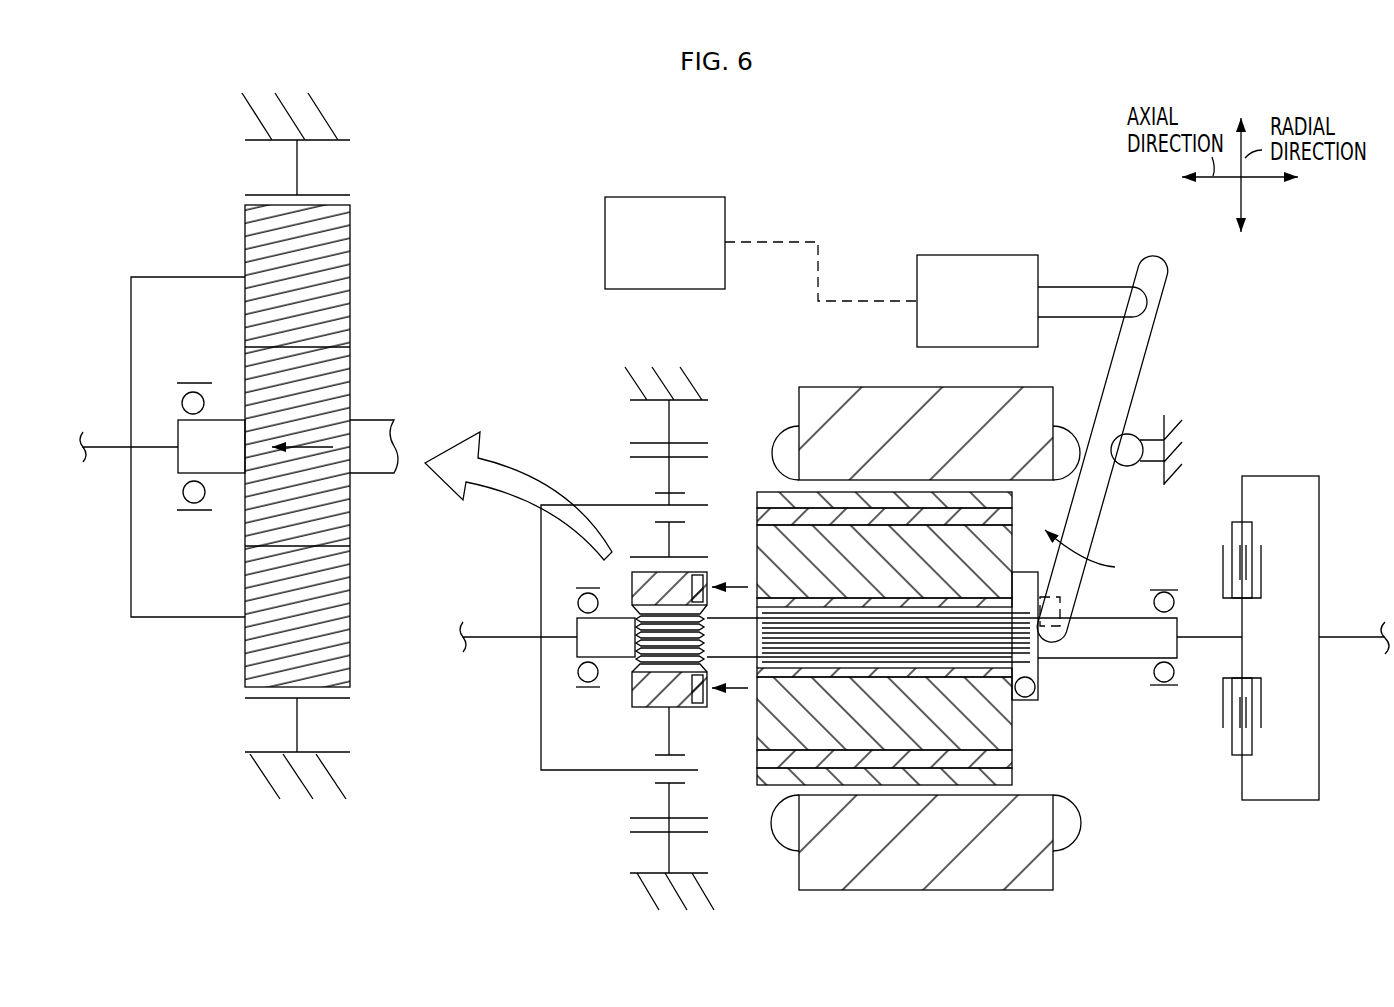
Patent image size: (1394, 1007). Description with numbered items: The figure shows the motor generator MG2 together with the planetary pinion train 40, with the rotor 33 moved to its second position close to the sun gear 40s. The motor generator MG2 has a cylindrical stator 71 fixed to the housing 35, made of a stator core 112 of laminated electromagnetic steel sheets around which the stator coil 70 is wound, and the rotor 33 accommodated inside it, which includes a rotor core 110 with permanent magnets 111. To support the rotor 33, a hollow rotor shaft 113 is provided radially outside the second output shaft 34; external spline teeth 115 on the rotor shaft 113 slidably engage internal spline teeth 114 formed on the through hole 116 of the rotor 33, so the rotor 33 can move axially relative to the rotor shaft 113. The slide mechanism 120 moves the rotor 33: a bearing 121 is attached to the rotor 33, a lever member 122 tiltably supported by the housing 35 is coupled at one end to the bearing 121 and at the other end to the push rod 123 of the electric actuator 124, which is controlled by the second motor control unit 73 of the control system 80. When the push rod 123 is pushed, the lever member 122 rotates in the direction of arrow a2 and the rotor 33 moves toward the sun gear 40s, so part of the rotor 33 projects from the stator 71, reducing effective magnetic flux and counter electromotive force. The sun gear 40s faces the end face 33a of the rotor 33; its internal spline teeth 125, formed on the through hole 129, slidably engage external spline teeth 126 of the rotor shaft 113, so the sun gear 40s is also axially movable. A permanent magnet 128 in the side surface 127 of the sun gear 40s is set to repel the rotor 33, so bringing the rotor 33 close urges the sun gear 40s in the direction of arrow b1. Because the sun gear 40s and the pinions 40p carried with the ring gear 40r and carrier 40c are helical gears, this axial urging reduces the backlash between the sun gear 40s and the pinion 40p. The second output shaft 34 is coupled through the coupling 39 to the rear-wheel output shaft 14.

The planetary pinion train 40 is at (212, 148).
The carrier 40c is at (176, 618).
The ring gear 40r is at (355, 206).
The pinion 40p is at (355, 264).
The sun gear 40s is at (340, 412).
The arrow b1 is at (322, 447).
The external spline teeth 126 is at (665, 547).
The permanent magnet 128 is at (698, 573).
The through hole 129 is at (648, 662).
The internal spline teeth 125 is at (655, 717).
The side surface 127 is at (708, 697).
The housing 35 is at (338, 112).
The second output shaft 34 is at (98, 456).
The rotor shaft 113 is at (374, 475).
The control system 80 is at (652, 178).
The second motor control unit 73 is at (712, 197).
The electric actuator 124 is at (976, 255).
The push rod 123 is at (1067, 288).
The slide mechanism 120 is at (1178, 290).
The lever member 122 is at (1140, 386).
The motor generator MG2 is at (846, 380).
The stator 71 is at (986, 843).
The stator coil 70 is at (1072, 828).
The stator core 112 is at (1042, 880).
The rotor 33 is at (919, 651).
The internal spline teeth 114 is at (905, 612).
The through hole 116 is at (983, 608).
The external spline teeth 115 is at (820, 622).
The rotor core 110 is at (1012, 733).
The permanent magnets 111 is at (1012, 765).
The end face 33a is at (757, 762).
The bearing 121 is at (1040, 693).
The arrow a2 is at (1091, 543).
The coupling 39 is at (1298, 476).
The rear-wheel output shaft 14 is at (1353, 636).